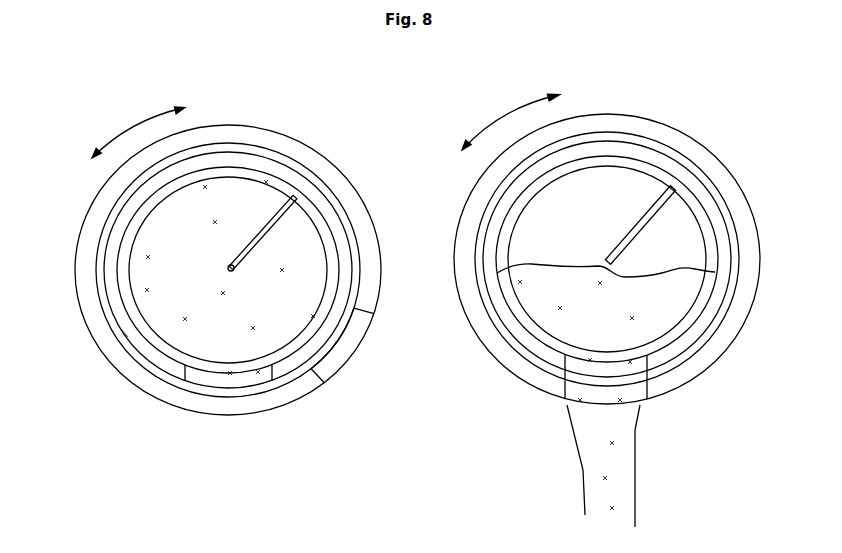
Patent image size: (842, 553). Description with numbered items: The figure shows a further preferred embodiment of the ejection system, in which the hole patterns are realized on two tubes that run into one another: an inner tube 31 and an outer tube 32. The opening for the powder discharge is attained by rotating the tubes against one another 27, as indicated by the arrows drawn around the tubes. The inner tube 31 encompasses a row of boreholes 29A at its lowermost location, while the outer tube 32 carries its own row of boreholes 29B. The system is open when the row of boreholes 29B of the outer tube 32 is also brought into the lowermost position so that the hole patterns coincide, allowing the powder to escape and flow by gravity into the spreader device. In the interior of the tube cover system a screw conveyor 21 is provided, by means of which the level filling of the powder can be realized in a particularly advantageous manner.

The screw conveyor 21 is at (295, 198).
The movement of the tubes against one another 27 is at (135, 120).
The row of boreholes of the inner tube 29A is at (233, 385).
The row of boreholes of the outer tube 29B is at (347, 365).
The inner tube 31 is at (102, 353).
The outer tube 32 is at (160, 397).